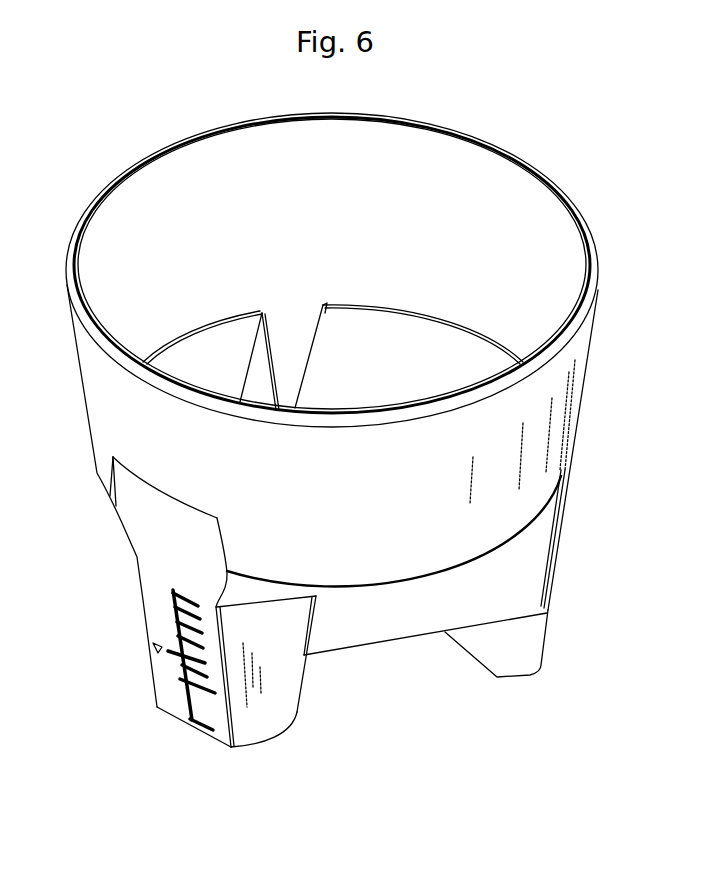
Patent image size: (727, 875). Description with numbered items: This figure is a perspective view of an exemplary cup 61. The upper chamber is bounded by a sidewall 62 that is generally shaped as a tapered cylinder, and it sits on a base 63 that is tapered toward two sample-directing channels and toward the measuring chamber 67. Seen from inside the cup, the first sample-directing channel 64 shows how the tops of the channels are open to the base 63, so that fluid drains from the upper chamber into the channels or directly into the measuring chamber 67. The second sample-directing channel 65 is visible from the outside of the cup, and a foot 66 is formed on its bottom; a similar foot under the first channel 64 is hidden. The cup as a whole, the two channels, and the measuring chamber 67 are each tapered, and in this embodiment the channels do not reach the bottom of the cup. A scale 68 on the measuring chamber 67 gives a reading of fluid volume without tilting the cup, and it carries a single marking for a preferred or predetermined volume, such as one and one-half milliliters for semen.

The cup 61 is at (94, 172).
The sidewall of the curved upper chamber 62 is at (346, 199).
The base of the upper chamber 63 is at (382, 363).
The first sample-directing channel 64 is at (290, 350).
The second sample-directing channel 65 is at (522, 573).
The foot 66 is at (503, 657).
The measuring chamber 67 is at (282, 660).
The scale 68 is at (185, 630).